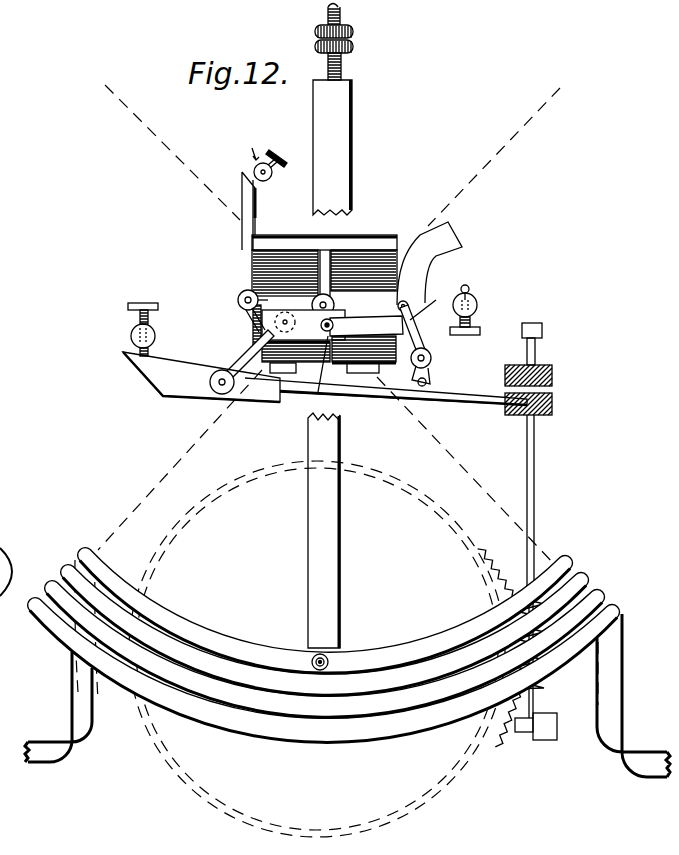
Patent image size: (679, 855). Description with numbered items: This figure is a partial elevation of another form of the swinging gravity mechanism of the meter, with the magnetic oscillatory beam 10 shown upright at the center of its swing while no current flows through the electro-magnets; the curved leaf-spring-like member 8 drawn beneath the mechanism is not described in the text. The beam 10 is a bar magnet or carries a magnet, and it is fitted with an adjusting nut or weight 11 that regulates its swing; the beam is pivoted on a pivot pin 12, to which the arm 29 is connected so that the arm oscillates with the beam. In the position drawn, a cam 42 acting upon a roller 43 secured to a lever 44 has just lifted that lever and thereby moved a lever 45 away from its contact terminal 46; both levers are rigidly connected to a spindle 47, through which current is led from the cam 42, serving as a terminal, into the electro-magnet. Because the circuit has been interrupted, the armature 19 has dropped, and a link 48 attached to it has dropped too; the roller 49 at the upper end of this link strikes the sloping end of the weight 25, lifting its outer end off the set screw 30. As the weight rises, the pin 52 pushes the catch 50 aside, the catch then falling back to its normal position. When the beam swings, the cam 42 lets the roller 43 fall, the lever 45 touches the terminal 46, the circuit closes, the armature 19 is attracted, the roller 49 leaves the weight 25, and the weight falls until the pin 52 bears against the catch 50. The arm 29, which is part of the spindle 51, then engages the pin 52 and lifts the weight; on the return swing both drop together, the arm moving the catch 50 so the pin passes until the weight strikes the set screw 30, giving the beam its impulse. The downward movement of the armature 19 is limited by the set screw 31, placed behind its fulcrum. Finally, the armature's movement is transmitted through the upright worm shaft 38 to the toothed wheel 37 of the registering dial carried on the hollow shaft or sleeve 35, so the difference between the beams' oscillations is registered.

The leaf spring 8 is at (258, 652).
The oscillatory beam 10 is at (342, 166).
The adjusting nut or weight 11 is at (357, 51).
The pivot pin 12 is at (296, 327).
The armature 19 is at (380, 392).
The weight 25 is at (288, 414).
The arm 29 is at (434, 309).
The set screw 30 is at (480, 310).
The set screw 31 is at (135, 318).
The hollow shaft or sleeve 35 is at (332, 659).
The toothed wheel 37 is at (492, 576).
The worm shaft 38 is at (530, 633).
The cam 42 is at (340, 326).
The roller 43 is at (330, 292).
The lever 44 is at (260, 336).
The lever 45 is at (243, 270).
The contact terminal 46 is at (264, 180).
The spindle 47 is at (238, 300).
The link 48 is at (220, 347).
The roller 49 is at (240, 315).
The catch 50 is at (427, 350).
The spindle 51 is at (317, 375).
The pin 52 is at (411, 294).